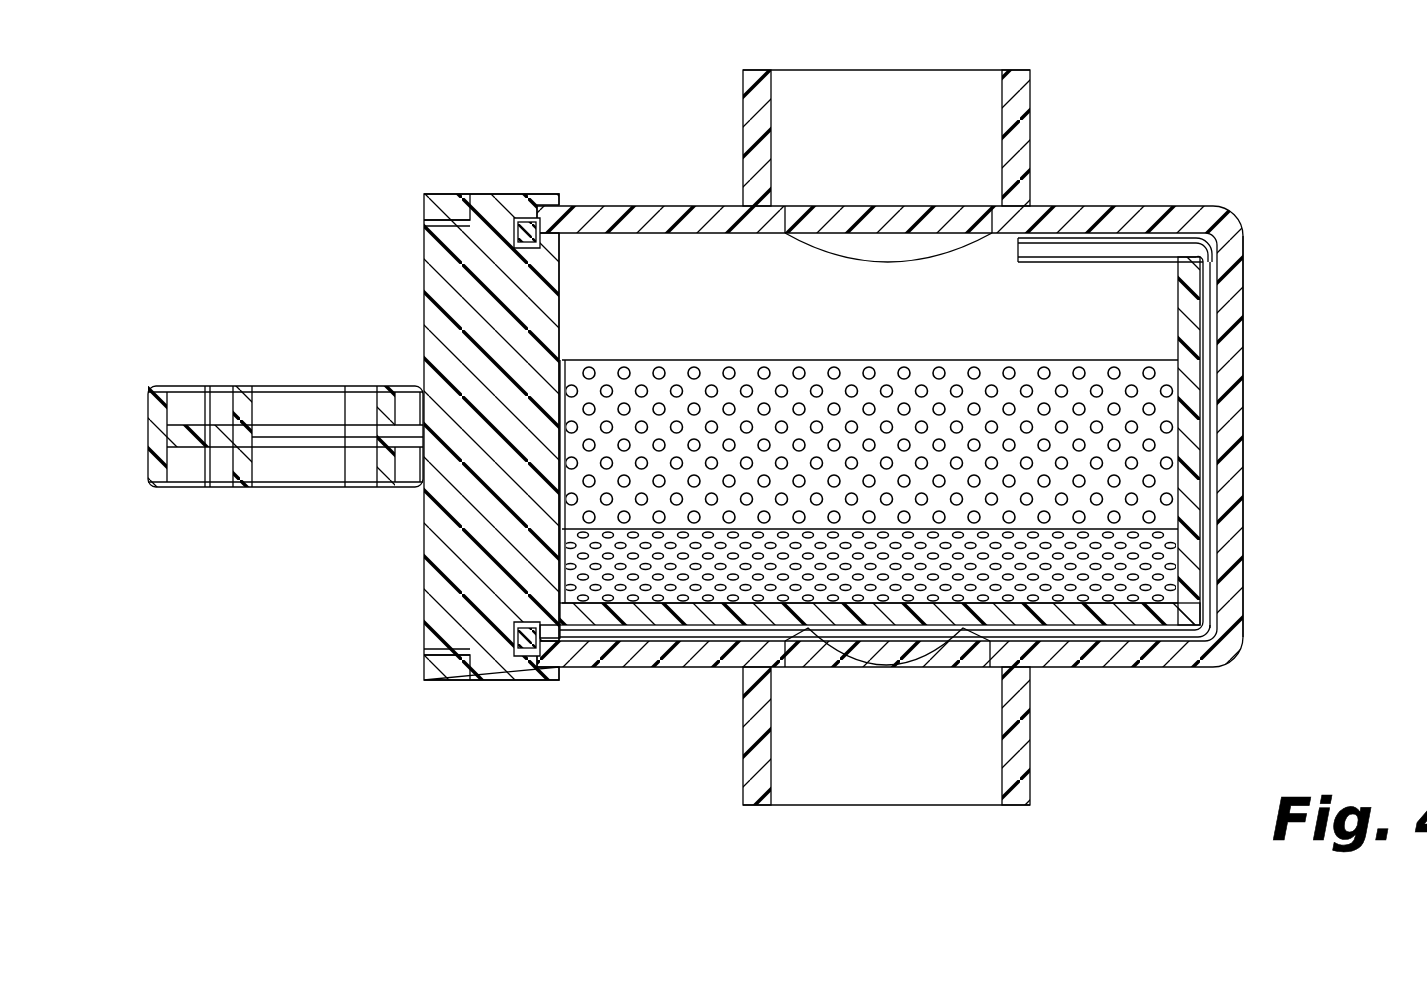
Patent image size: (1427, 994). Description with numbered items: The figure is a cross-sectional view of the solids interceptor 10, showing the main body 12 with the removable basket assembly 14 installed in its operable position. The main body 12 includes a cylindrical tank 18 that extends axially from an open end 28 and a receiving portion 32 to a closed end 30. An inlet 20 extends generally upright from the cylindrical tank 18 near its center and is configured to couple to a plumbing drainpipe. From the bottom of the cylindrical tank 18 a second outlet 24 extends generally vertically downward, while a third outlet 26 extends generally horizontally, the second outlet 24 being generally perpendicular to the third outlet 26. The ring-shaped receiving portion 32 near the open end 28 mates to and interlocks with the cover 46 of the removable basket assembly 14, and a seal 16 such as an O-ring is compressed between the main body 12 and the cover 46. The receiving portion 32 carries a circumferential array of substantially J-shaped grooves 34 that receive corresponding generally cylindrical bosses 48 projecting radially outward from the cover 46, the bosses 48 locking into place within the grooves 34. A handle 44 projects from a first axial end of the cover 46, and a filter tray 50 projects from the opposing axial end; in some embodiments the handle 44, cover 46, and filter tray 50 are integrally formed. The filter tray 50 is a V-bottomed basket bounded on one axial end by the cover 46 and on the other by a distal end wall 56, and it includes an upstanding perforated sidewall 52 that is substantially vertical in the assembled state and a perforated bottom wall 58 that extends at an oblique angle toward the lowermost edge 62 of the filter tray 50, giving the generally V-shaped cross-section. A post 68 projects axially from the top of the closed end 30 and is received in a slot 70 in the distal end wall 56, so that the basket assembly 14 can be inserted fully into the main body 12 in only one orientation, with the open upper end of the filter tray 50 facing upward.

The solids interceptor 10 is at (287, 128).
The main body 12 is at (1060, 215).
The removable basket assembly 14 is at (445, 590).
The seal 16 is at (535, 215).
The cylindrical tank 18 is at (652, 265).
The inlet 20 is at (1018, 80).
The second outlet 24 is at (1028, 765).
The third outlet 26 is at (848, 655).
The open end 28 is at (425, 205).
The closed end 30 is at (1237, 316).
The receiving portion 32 is at (445, 665).
The grooves 34 is at (520, 210).
The handle 44 is at (160, 455).
The cover 46 is at (440, 524).
The bosses 48 is at (483, 193).
The filter tray 50 is at (1062, 510).
The upstanding perforated sidewall 52 is at (893, 377).
The distal end wall 56 is at (1190, 392).
The perforated bottom wall 58 is at (942, 580).
The lowermost edge 62 is at (1148, 625).
The post 68 is at (1150, 250).
The slot 70 is at (1210, 270).